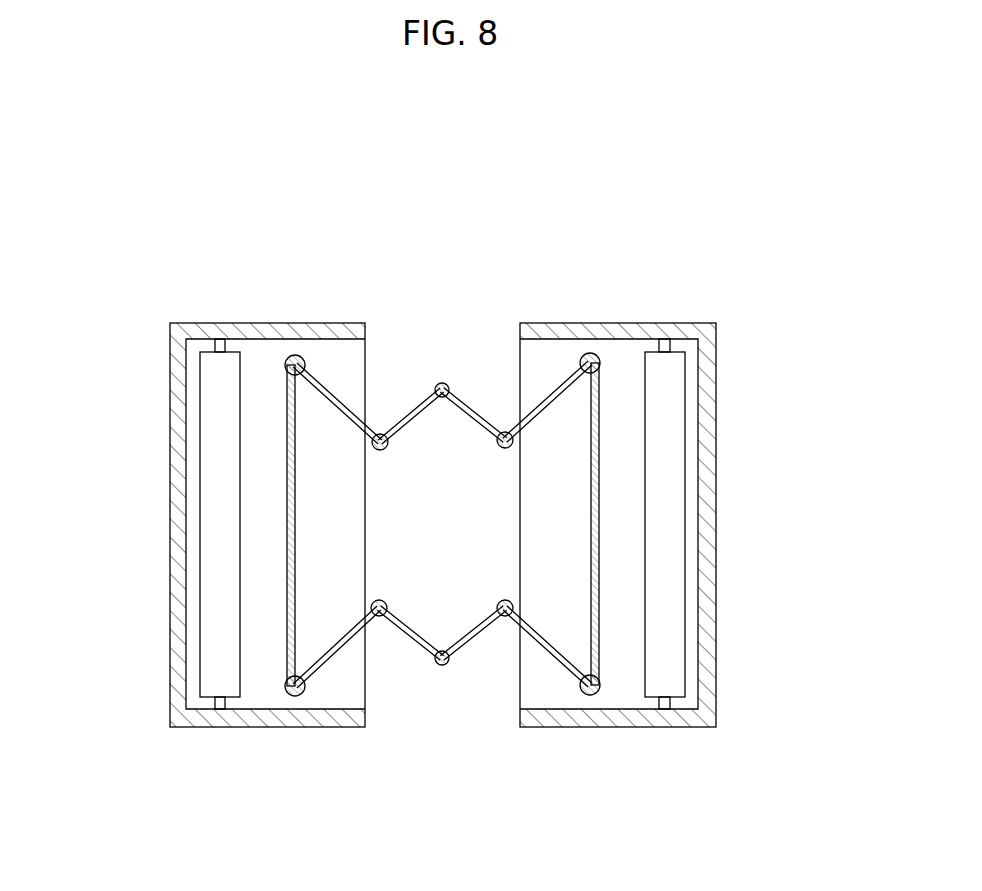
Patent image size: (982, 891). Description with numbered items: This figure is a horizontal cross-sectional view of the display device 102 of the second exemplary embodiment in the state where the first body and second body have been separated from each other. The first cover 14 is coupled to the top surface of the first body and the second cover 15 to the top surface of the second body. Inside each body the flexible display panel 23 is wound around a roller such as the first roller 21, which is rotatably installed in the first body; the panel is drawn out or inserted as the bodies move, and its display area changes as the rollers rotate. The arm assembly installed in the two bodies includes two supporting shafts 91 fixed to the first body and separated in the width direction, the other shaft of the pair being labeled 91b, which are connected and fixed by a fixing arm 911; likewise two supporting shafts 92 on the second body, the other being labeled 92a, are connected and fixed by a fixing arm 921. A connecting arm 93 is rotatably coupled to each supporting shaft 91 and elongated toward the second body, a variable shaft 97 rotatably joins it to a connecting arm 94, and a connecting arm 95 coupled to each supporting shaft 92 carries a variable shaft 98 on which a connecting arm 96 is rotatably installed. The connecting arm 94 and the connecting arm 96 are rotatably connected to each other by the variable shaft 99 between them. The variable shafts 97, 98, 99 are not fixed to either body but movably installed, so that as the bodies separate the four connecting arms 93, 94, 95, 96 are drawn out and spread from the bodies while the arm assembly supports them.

The display device 102 is at (461, 216).
The first cover 14 is at (178, 392).
The second cover 15 is at (707, 390).
The first roller 21 is at (220, 710).
The flexible display panel 23 is at (200, 490).
The supporting shaft 91 is at (294, 697).
The first upper pin 91b is at (296, 354).
The fixing arm 911 is at (290, 565).
The supporting shaft 92 is at (590, 696).
The second upper pin 92a is at (591, 352).
The fixing arm 921 is at (598, 565).
The connecting arm 93 is at (333, 392).
The connecting arm 94 is at (405, 412).
The connecting arm 95 is at (553, 392).
The connecting arm 96 is at (474, 412).
The variable shaft 97 is at (372, 446).
The variable shaft 98 is at (513, 446).
The variable shaft 99 is at (442, 382).